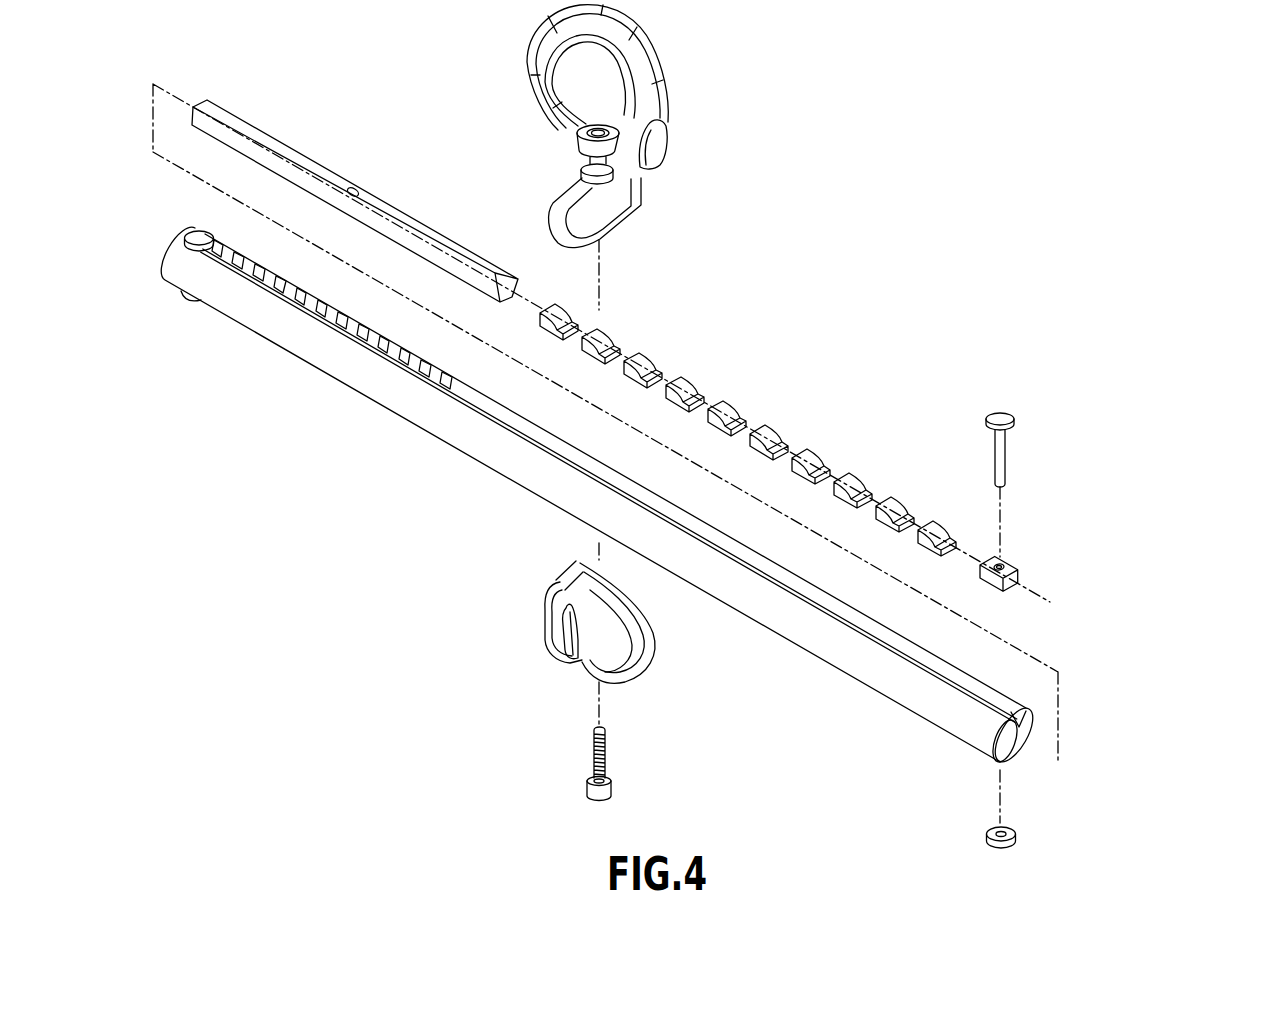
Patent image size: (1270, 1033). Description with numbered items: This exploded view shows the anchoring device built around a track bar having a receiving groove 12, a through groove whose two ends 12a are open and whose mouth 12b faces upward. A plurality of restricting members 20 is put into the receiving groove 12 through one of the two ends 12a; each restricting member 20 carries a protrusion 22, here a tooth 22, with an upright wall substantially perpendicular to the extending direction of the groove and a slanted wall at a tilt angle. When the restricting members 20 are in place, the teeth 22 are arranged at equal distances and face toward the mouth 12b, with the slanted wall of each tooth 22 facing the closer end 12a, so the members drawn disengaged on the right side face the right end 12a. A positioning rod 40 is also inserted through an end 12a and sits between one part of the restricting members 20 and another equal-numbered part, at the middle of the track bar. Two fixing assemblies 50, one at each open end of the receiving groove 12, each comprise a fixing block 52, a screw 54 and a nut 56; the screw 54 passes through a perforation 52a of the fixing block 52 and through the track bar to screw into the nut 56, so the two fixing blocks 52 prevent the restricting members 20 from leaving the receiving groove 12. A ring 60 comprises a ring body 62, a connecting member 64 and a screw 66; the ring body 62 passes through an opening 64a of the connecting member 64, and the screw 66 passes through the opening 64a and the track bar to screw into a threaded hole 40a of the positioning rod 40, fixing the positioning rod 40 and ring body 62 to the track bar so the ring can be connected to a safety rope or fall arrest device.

The receiving groove 12 is at (830, 618).
The ends of the receiving groove 12a is at (1013, 733).
The mouth of the receiving groove 12b is at (964, 668).
The restricting member 20 is at (622, 323).
The protrusion 22 is at (757, 424).
The positioning rod 40 is at (271, 120).
The threaded hole 40a is at (357, 190).
The fixing assembly 50 is at (189, 223).
The fixing block 52 is at (1013, 587).
The perforation of the fixing block 52a is at (1005, 562).
The screw 54 is at (1000, 458).
The nut 56 is at (1015, 832).
The ring 60 is at (512, 114).
The ring body 62 is at (660, 140).
The connecting member 64 is at (550, 637).
The opening of the connecting member 64a is at (577, 658).
The screw 66 is at (600, 758).